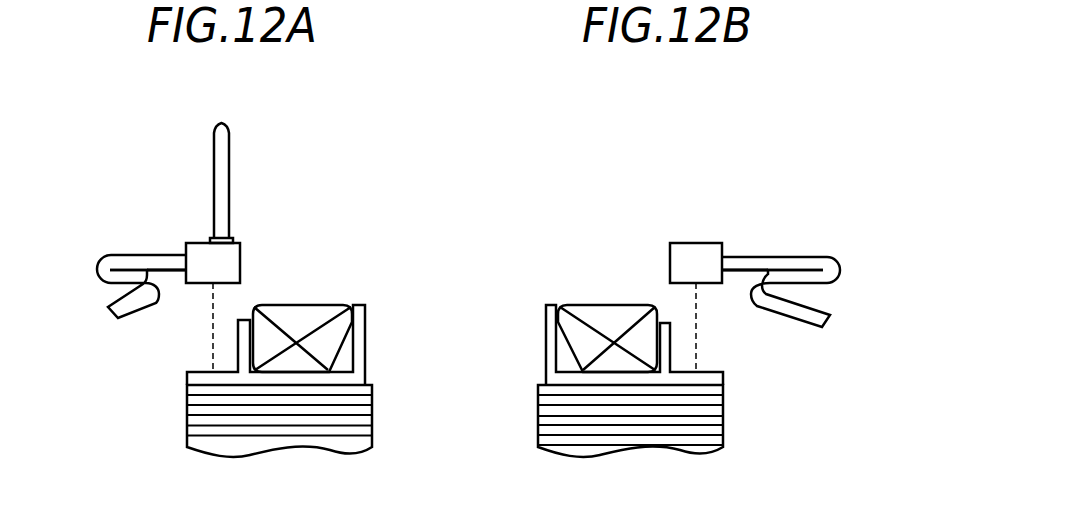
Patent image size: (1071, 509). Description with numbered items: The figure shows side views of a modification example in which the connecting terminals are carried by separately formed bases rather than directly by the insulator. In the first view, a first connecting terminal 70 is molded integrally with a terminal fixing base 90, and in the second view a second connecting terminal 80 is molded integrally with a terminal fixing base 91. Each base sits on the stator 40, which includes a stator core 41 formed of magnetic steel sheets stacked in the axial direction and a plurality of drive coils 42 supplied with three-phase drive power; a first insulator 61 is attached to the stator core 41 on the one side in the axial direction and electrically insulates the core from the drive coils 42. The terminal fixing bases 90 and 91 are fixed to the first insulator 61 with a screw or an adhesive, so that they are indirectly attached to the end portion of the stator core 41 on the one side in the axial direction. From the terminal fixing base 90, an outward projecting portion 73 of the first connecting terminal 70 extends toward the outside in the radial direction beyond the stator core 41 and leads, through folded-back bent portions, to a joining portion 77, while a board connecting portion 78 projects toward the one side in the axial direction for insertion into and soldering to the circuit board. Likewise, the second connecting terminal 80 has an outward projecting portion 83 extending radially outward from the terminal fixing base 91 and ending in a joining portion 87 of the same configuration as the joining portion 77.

In FIG. 12A, the stator 40 is at (352, 180).
In FIG. 12B, the stator 40 is at (563, 216).
In FIG. 12A, the stator core 41 is at (187, 415).
In FIG. 12B, the stator core 41 is at (723, 420).
In FIG. 12A, the drive coil 42 is at (320, 313).
In FIG. 12B, the drive coil 42 is at (605, 312).
In FIG. 12A, the first insulator 61 is at (365, 333).
In FIG. 12B, the first insulator 61 is at (545, 370).
In FIG. 12A, the first connecting terminal 70 is at (250, 116).
In FIG. 12A, the outward projecting portion 73 is at (147, 254).
In FIG. 12A, the joining portion 77 is at (92, 293).
In FIG. 12A, the board connecting portion 78 is at (214, 169).
In FIG. 12A, the terminal fixing base 90 is at (240, 263).
In FIG. 12B, the second connecting terminal 80 is at (838, 224).
In FIG. 12B, the outward projecting portion 83 is at (772, 255).
In FIG. 12B, the joining portion 87 is at (844, 303).
In FIG. 12B, the terminal fixing base 91 is at (697, 242).